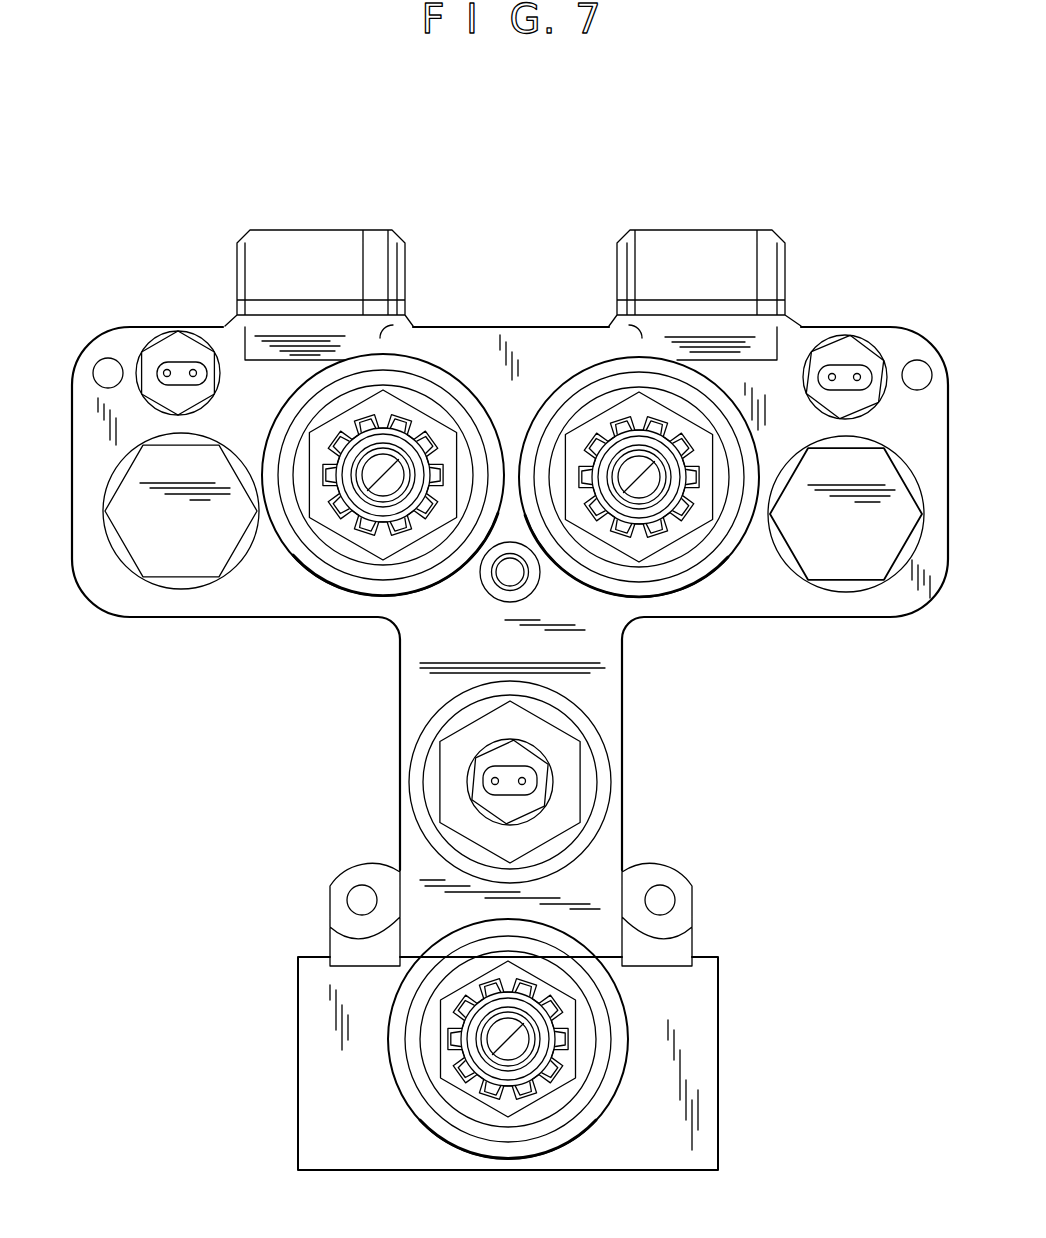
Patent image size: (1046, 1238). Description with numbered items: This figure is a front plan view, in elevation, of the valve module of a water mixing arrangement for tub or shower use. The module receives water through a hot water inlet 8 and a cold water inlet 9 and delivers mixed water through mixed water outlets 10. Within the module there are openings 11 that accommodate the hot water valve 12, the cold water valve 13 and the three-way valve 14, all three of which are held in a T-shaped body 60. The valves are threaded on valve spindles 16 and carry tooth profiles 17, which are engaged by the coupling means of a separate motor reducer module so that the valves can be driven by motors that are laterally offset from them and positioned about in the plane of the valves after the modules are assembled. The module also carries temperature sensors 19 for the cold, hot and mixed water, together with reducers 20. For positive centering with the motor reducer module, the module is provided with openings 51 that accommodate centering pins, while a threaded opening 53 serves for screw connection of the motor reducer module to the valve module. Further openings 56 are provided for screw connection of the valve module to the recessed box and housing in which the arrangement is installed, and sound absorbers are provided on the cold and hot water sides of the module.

The hot water inlet 8 is at (712, 252).
The cold water inlet 9 is at (332, 258).
The mixed water outlets 10 is at (310, 1057).
The openings 11 is at (483, 1157).
The hot water valve 12 is at (628, 408).
The cold water valve 13 is at (385, 404).
The three-way valve 14 is at (447, 1077).
The valve spindles 16 is at (370, 504).
The tooth profiles 17 is at (313, 503).
The temperature sensors 19 is at (178, 367).
The reducers 20 is at (163, 562).
The openings 51 is at (108, 366).
The threaded opening 53 is at (515, 574).
The openings 56 is at (362, 896).
The T-shaped body 60 is at (597, 698).